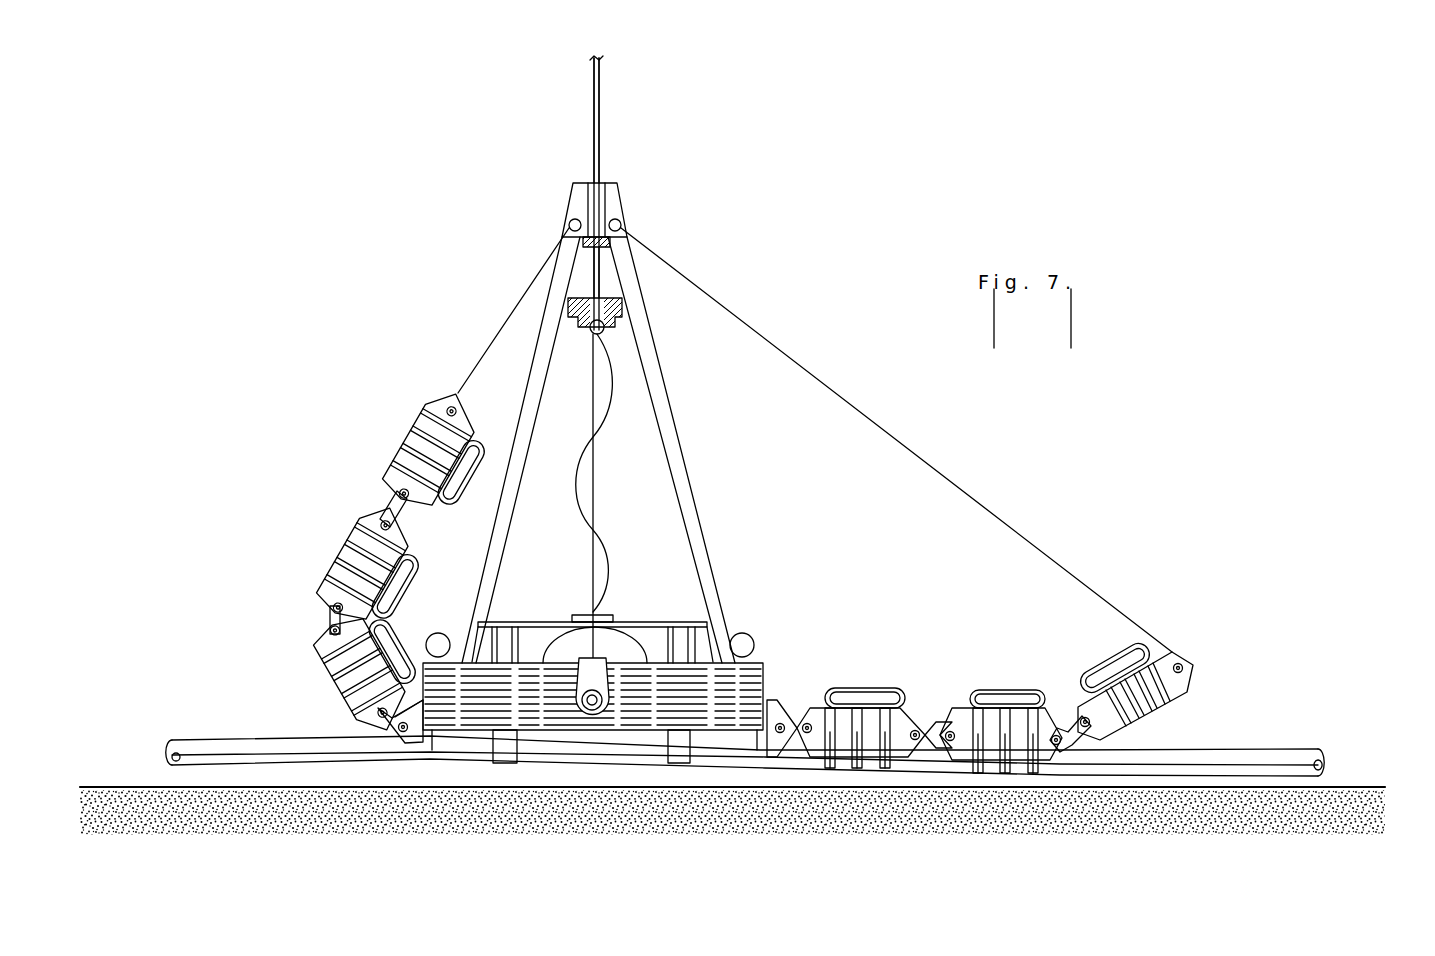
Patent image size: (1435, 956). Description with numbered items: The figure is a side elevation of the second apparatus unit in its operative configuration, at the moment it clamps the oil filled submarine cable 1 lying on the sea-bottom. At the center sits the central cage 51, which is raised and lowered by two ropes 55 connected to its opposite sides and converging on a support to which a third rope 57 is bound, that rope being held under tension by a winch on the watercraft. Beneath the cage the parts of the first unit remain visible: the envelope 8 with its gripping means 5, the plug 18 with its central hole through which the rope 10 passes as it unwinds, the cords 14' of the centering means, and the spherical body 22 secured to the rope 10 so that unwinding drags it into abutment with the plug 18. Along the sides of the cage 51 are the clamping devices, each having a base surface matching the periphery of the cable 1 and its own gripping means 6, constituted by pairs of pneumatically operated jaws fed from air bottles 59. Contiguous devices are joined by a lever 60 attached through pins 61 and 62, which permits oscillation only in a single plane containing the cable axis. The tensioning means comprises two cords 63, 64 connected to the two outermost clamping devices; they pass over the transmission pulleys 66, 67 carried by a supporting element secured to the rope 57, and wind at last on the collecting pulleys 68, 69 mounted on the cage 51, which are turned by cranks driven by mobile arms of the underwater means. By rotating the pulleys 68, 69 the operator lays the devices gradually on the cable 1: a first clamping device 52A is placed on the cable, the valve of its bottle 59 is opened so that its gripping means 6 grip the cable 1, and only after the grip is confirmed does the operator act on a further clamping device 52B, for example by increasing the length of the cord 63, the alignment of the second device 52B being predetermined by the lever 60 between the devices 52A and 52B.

The submarine cable 1 is at (305, 742).
The gripping means 5 is at (512, 760).
The gripping means 6 is at (835, 766).
The envelope 8 is at (535, 616).
The rope 10 is at (600, 138).
The cords 14' is at (598, 450).
The plug 18 is at (623, 305).
The spherical body 22 is at (604, 330).
The central cage 51 is at (765, 670).
The first clamping device 52A is at (908, 714).
The second clamping device 52B is at (965, 723).
The ropes 55 is at (596, 270).
The third rope 57 is at (597, 124).
The air bottles 59 is at (478, 452).
The lever 60 is at (401, 515).
The pin 61 is at (380, 521).
The pin 62 is at (398, 494).
The cord 63 is at (660, 395).
The cord 64 is at (534, 379).
The transmission pulley 66 is at (621, 222).
The transmission pulley 67 is at (569, 224).
The collecting pulley 68 is at (756, 637).
The collecting pulley 69 is at (437, 640).